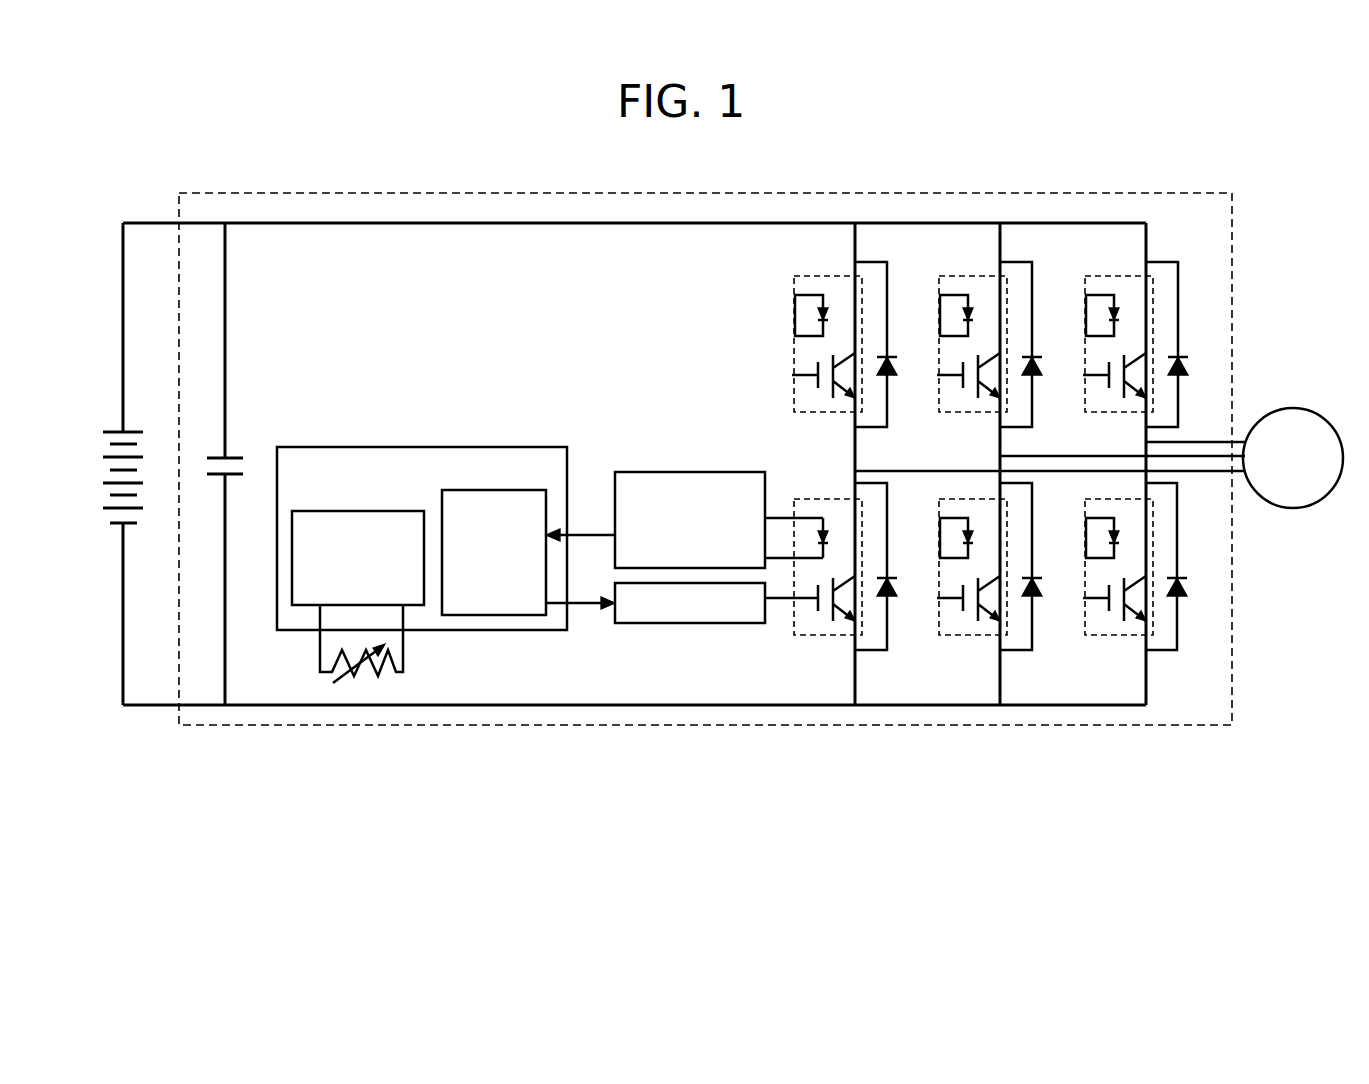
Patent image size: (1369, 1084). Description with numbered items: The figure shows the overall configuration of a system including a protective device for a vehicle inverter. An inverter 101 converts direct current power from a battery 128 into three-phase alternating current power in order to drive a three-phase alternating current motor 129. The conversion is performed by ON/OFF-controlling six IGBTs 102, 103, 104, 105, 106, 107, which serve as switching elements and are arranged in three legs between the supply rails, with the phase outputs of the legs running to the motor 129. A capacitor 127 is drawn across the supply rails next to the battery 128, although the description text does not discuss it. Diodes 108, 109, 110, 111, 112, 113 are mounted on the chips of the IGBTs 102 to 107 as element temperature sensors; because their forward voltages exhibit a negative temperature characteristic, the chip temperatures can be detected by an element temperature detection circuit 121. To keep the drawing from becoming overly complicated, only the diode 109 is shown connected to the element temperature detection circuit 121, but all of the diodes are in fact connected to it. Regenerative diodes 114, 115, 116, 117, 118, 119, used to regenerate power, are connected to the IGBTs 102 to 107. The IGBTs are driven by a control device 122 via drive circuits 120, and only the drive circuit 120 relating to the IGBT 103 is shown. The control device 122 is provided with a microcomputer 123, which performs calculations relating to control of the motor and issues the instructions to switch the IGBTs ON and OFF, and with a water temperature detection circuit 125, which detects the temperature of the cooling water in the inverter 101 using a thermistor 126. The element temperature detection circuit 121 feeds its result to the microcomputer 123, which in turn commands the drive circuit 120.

The inverter 101 is at (200, 193).
The IGBT 102 is at (795, 378).
The IGBT 103 is at (830, 634).
The IGBT 104 is at (942, 392).
The IGBT 105 is at (946, 612).
The IGBT 106 is at (1087, 387).
The IGBT 107 is at (1086, 612).
The diode 108 is at (795, 300).
The diode 109 is at (828, 522).
The diode 110 is at (938, 318).
The diode 111 is at (940, 532).
The diode 112 is at (1086, 316).
The diode 113 is at (1086, 530).
The regenerative diode 114 is at (912, 343).
The regenerative diode 115 is at (918, 568).
The regenerative diode 116 is at (1055, 348).
The regenerative diode 117 is at (1062, 568).
The regenerative diode 118 is at (1188, 352).
The regenerative diode 119 is at (1190, 580).
The drive circuit 120 is at (692, 624).
The element temperature detection circuit 121 is at (692, 471).
The control device 122 is at (306, 447).
The microcomputer 123 is at (506, 489).
The water temperature detection circuit 125 is at (322, 510).
The thermistor 126 is at (388, 678).
The smoothing capacitor 127 is at (222, 455).
The battery 128 is at (118, 428).
The three-phase alternating current motor 129 is at (1320, 410).